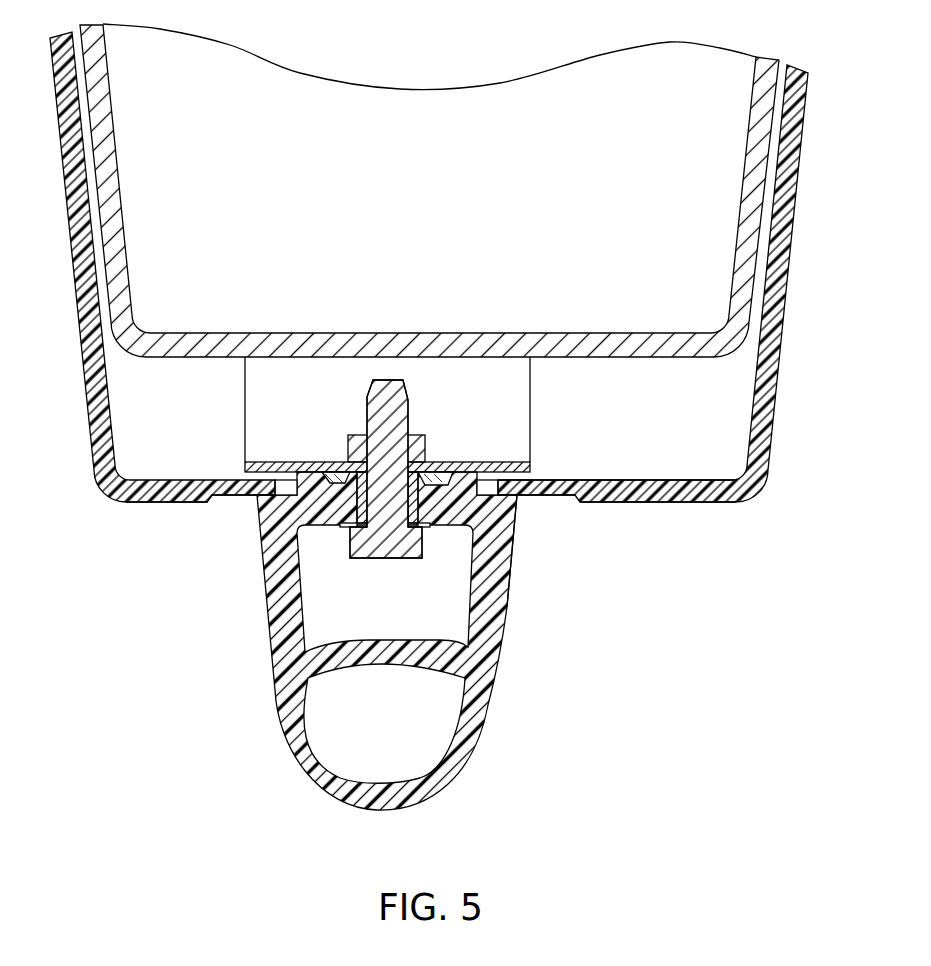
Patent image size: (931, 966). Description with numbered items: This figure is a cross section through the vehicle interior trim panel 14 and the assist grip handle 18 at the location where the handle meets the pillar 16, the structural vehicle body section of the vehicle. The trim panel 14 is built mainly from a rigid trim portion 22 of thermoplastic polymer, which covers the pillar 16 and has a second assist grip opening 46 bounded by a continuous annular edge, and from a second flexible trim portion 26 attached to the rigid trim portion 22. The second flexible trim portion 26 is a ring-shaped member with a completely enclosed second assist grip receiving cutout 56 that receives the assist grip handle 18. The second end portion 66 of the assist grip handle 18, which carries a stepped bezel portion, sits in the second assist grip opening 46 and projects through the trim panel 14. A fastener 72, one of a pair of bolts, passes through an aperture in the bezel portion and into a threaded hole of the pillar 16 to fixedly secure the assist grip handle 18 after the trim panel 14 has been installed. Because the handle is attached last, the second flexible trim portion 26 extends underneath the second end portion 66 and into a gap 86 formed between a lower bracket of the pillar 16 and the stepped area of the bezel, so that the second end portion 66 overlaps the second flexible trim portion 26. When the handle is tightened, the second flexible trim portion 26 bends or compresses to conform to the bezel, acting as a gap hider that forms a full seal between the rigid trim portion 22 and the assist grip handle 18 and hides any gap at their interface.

The vehicle interior trim panel 14 is at (698, 525).
The pillar 16 is at (120, 168).
The assist grip handle 18 is at (297, 775).
The rigid trim portion 22 is at (88, 425).
The second flexible trim portion 26 is at (570, 480).
The second assist grip opening 46 is at (213, 503).
The second assist grip receiving cutout 56 is at (497, 488).
The second end portion 66 is at (517, 523).
The fastener 72 is at (408, 400).
The gap 86 is at (287, 493).